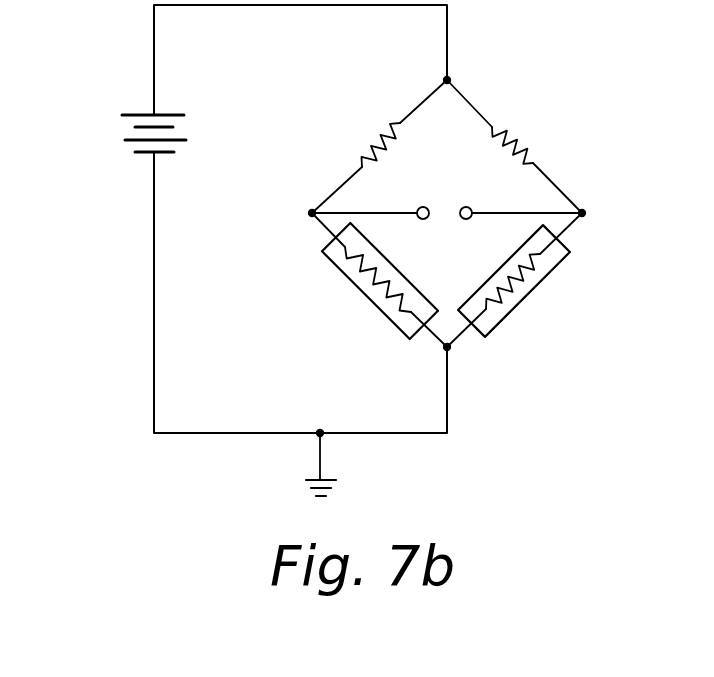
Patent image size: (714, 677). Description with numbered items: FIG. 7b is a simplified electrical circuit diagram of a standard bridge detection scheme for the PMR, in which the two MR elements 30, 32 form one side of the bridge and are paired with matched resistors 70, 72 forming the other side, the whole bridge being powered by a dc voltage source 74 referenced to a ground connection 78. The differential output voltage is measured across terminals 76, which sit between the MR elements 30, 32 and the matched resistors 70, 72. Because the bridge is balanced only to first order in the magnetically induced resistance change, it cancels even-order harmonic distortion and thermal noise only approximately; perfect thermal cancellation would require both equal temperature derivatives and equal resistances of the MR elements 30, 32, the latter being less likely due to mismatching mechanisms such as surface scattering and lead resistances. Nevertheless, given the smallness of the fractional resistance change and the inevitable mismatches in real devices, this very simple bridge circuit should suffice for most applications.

The dc voltage source 74 is at (128, 113).
The matched resistor 72 is at (362, 156).
The matched resistor 70 is at (532, 148).
The terminals 76 is at (446, 205).
The MR element 32 is at (352, 283).
The MR element 30 is at (552, 279).
The ground connection 78 is at (323, 457).